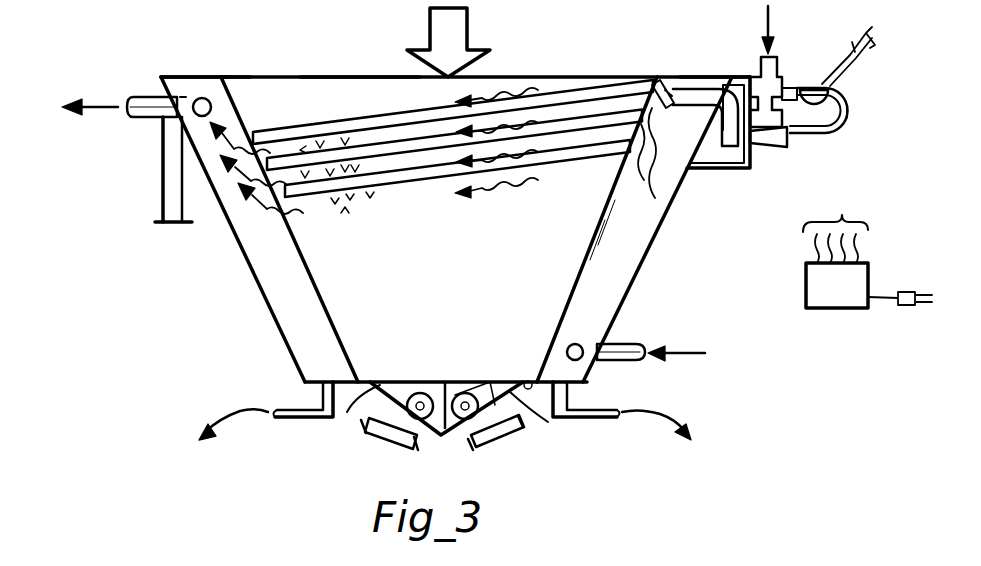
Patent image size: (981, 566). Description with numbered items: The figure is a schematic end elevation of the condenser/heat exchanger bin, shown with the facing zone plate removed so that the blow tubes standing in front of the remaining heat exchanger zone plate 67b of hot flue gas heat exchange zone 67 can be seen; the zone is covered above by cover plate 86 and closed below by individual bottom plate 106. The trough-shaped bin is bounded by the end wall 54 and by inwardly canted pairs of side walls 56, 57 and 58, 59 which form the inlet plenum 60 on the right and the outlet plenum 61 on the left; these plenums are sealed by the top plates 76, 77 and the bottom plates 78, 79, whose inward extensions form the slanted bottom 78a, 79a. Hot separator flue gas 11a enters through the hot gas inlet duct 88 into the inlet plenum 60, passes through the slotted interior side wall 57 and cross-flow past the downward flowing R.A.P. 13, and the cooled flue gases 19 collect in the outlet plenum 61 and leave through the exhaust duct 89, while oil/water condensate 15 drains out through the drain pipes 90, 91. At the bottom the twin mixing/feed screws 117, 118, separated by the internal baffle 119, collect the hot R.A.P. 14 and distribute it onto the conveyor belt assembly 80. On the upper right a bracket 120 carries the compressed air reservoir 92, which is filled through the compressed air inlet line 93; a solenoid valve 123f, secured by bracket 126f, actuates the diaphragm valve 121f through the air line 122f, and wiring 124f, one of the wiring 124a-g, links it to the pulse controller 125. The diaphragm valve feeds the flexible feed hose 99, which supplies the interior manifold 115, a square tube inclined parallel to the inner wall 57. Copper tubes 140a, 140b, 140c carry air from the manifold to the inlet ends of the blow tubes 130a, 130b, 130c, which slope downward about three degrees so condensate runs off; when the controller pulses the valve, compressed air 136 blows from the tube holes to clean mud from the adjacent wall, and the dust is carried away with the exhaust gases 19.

The hot separator flue gas 11a is at (692, 352).
The R.A.P. 13 is at (438, 50).
The hot R.A.P. 14 is at (500, 440).
The oil/water condensate 15 is at (245, 405).
The cooled flue gases 19 is at (101, 105).
The end wall 54 is at (160, 156).
The side wall 56 is at (640, 279).
The interior side wall 57 is at (572, 277).
The side wall 58 is at (253, 280).
The interior side wall 59 is at (335, 316).
The inlet plenum 60 is at (641, 256).
The outlet plenum 61 is at (293, 268).
The hot flue gas heat exchange zone 67 is at (298, 74).
The heat exchanger zone plate 67b is at (252, 108).
The top plate 76 is at (184, 75).
The top plate 77 is at (700, 76).
The bottom plate 78 is at (345, 380).
The slanted bottom 78a is at (370, 414).
The bottom plate 79 is at (521, 378).
The slanted bottom 79a is at (528, 416).
The conveyor belt assembly 80 is at (365, 437).
The cover plate 86 is at (364, 75).
The hot gas inlet duct 88 is at (615, 345).
The exhaust duct 89 is at (147, 97).
The drain pipe 90 is at (588, 409).
The drain pipe 91 is at (295, 406).
The compressed air reservoir 92 is at (762, 70).
The compressed air inlet line 93 is at (784, 30).
The feed hose 99 is at (722, 168).
The individual bottom plate 106 is at (373, 380).
The interior manifold 115 is at (600, 228).
The mixing/feed screw 117 is at (480, 392).
The mixing/feed screw 118 is at (418, 392).
The internal baffle 119 is at (461, 385).
The bracket 120 is at (754, 166).
The diaphragm valve 121f is at (788, 148).
The air line 122f is at (846, 123).
The solenoid valve 123f is at (845, 96).
The wiring 124a-g is at (849, 228).
The wiring 124f is at (845, 46).
The pulse controller 125 is at (820, 295).
The bracket 126f is at (786, 82).
The blow tube 130a is at (336, 130).
The blow tube 130b is at (397, 150).
The blow tube 130c is at (426, 185).
The compressed air 136 is at (364, 205).
The copper tube 140a is at (648, 79).
The copper tube 140b is at (660, 205).
The copper tube 140c is at (682, 191).